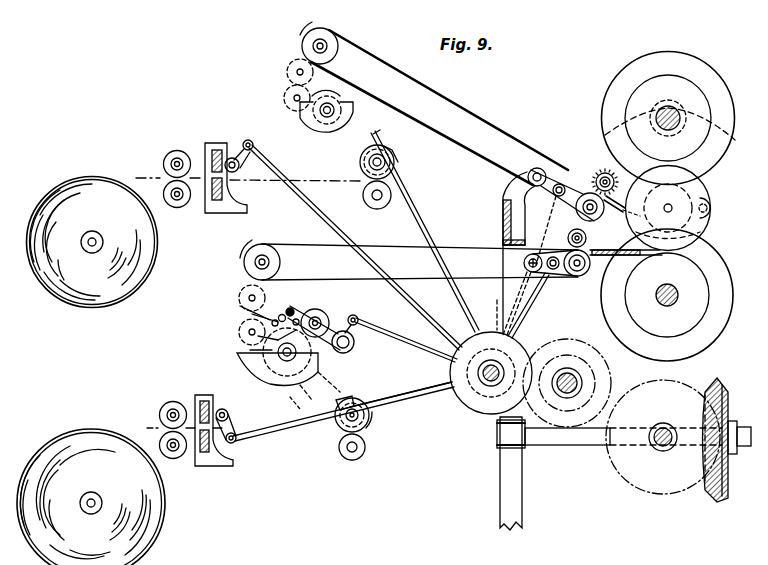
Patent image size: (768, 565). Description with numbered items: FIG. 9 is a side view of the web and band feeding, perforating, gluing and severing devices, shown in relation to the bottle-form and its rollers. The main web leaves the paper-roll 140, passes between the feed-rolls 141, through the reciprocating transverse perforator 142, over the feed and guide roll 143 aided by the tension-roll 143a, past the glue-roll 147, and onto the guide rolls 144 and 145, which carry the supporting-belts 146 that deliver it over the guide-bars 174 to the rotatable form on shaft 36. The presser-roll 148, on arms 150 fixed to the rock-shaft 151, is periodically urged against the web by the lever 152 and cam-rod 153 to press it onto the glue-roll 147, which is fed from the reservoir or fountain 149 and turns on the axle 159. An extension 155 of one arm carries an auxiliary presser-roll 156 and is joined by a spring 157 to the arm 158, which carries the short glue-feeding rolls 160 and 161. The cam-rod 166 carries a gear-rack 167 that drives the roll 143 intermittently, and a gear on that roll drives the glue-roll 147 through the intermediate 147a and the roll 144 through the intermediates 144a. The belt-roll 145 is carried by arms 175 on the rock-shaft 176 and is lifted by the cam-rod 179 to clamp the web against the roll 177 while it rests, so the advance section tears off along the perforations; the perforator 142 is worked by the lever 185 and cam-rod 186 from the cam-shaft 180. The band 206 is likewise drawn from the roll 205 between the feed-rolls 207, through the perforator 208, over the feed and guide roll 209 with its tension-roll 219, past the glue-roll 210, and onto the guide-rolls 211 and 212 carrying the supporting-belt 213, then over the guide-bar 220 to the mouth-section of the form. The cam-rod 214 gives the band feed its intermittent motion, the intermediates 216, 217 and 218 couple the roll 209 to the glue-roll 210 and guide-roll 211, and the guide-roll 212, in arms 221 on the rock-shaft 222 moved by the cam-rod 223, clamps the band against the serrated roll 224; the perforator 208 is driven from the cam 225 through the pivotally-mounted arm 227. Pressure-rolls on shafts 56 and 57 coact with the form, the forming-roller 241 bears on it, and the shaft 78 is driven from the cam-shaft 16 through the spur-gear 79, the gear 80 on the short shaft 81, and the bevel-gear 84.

The cam-shaft 16 is at (568, 372).
The form shaft 36 is at (668, 208).
The upper pressure-roll shaft 56 is at (673, 128).
The lower pressure-roll shaft 57 is at (671, 305).
The shaft 78 is at (744, 429).
The spur-gear 79 is at (624, 372).
The gear 80 is at (670, 386).
The short shaft 81 is at (664, 451).
The bevel-gear 84 is at (725, 488).
The paper-roll 140 is at (91, 497).
The feed-rolls 141 is at (169, 431).
The reciprocating transverse perforator 142 is at (210, 391).
The feed and guide roll 143 is at (335, 438).
The tension-roll 143a is at (361, 457).
The guide roll 144 is at (280, 264).
The intermediates 144a is at (242, 292).
The belt-roll 145 is at (578, 276).
The supporting-belts 146 is at (445, 244).
The glue-roll 147 is at (250, 350).
The intermediate 147a is at (273, 410).
The presser-roll 148 is at (322, 310).
The reservoir or fountain 149 is at (262, 372).
The arms 150 is at (353, 309).
The rock-shaft 151 is at (357, 349).
The lever 152 is at (350, 330).
The cam-rod 153 is at (412, 340).
The extension 155 is at (298, 314).
The auxiliary presser-roll 156 is at (290, 308).
The spring 157 is at (299, 343).
The arm 158 is at (258, 336).
The axle 159 is at (278, 354).
The glue-feeding roll 160 is at (252, 314).
The glue-feeding roll 161 is at (240, 306).
The cam-rod 166 is at (401, 388).
The gear-rack 167 is at (338, 402).
The guide-bars 174 is at (625, 256).
The arms 175 is at (553, 256).
The rock-shaft 176 is at (524, 262).
The roll 177 is at (586, 238).
The cam-rod 179 is at (528, 312).
The cam-shaft 180 is at (488, 382).
The lever 185 is at (230, 416).
The cam-rod 186 is at (340, 416).
The band roll 205 is at (92, 242).
The band 206 is at (146, 178).
The feed-rolls 207 is at (177, 151).
The reciprocating transverse perforator 208 is at (222, 139).
The feed and guide roll 209 is at (360, 166).
The glue-roll 210 is at (310, 108).
The guide-roll 211 is at (302, 46).
The guide-roll 212 is at (586, 193).
The supporting-belt 213 is at (439, 107).
The cam-rod 214 is at (428, 200).
The intermediate 216 is at (336, 140).
The intermediate 217 is at (285, 96).
The intermediate 218 is at (288, 72).
The tension-roll 219 is at (378, 209).
The guide-bar 220 is at (616, 211).
The arms 221 is at (559, 183).
The rock-shaft 222 is at (530, 170).
The cam-rod 223 is at (537, 220).
The serrated roll 224 is at (605, 172).
The cam 225 is at (355, 247).
The pivotally-mounted arm 227 is at (252, 164).
The forming-roller 241 is at (716, 208).